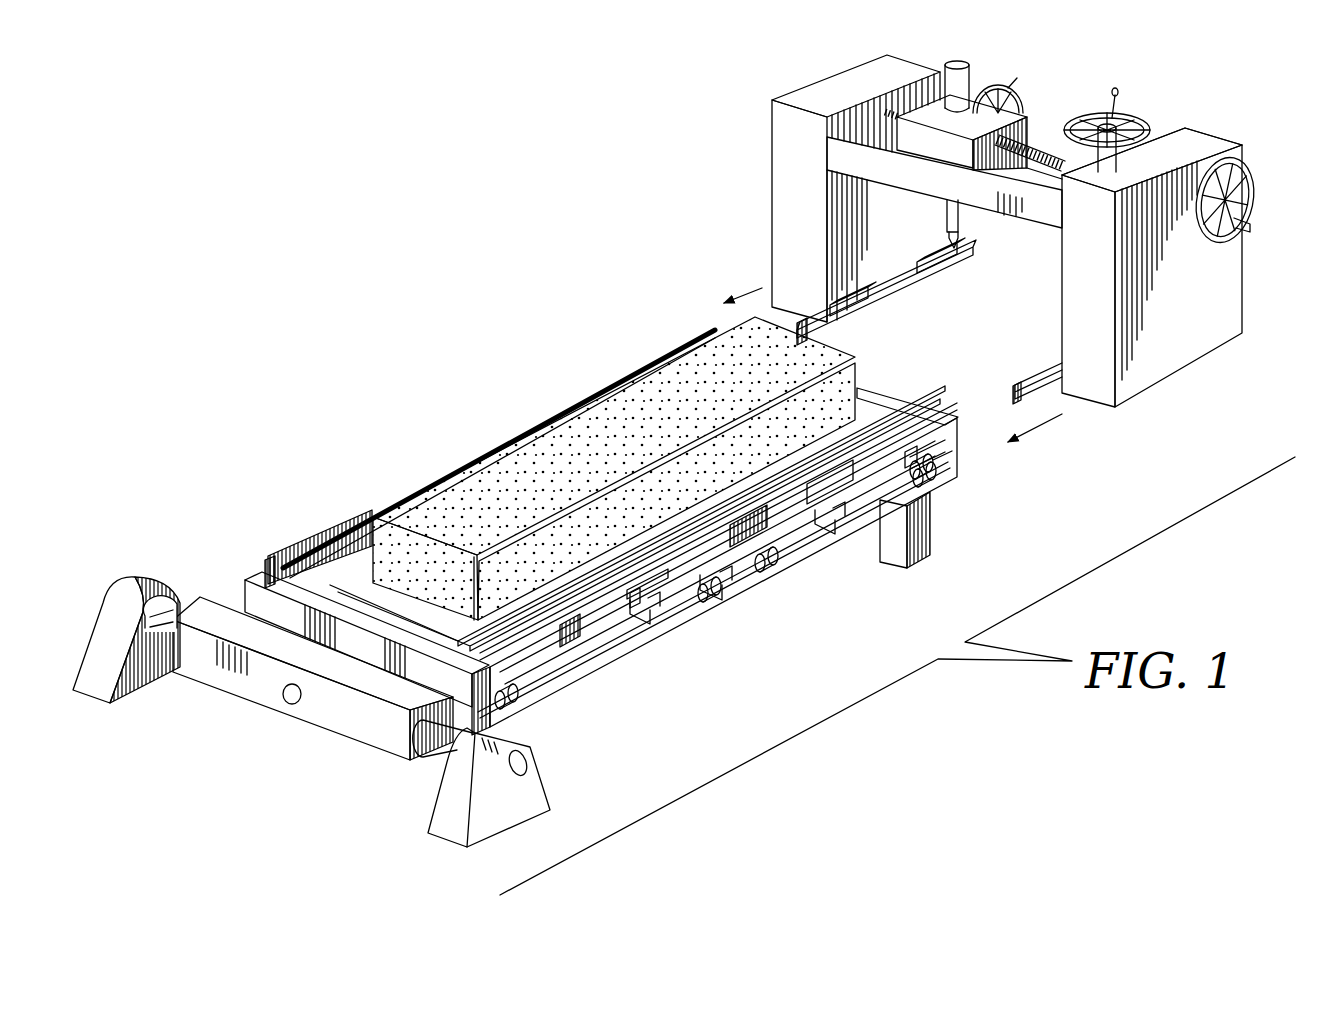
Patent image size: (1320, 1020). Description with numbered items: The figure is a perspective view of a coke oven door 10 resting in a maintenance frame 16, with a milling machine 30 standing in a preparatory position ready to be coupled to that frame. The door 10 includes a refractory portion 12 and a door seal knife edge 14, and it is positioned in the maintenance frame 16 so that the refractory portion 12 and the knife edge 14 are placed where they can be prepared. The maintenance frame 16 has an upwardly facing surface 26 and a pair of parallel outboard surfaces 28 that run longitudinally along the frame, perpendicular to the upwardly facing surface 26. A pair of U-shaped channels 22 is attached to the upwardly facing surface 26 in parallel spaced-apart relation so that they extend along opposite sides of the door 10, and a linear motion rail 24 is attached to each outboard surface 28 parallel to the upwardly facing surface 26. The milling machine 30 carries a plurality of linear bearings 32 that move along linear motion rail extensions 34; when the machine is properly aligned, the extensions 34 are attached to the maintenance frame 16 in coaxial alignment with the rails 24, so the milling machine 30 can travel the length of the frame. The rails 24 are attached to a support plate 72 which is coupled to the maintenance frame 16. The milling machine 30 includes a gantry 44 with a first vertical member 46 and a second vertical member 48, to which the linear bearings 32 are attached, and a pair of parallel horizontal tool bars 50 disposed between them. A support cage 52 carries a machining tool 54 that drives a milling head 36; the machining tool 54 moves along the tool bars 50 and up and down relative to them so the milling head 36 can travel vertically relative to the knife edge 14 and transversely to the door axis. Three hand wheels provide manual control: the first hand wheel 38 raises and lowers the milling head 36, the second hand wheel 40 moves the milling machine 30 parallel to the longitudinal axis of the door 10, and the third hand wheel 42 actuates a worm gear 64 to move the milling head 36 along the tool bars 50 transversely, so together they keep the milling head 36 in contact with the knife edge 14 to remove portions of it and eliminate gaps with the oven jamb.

The coke oven door 10 is at (515, 413).
The refractory portion 12 is at (627, 407).
The door seal knife edge 14 is at (353, 597).
The maintenance frame 16 is at (656, 640).
The channels 22 is at (268, 562).
The linear motion rail 24 is at (585, 656).
The upwardly facing surface 26 is at (258, 578).
The outboard surfaces 28 is at (775, 566).
The milling machine 30 is at (1245, 317).
The linear bearings 32 is at (855, 290).
The linear motion rail extensions 34 is at (890, 294).
The milling head 36 is at (958, 243).
The first hand wheel 38 is at (1010, 85).
The second hand wheel 40 is at (1094, 108).
The third hand wheel 42 is at (1248, 195).
The gantry 44 is at (1213, 127).
The first vertical member 46 is at (1158, 352).
The second vertical member 48 is at (788, 178).
The horizontal tool bars 50 is at (927, 183).
The support cage 52 is at (925, 140).
The machining tool 54 is at (962, 66).
The worm gear 64 is at (893, 110).
The support plate 72 is at (862, 470).